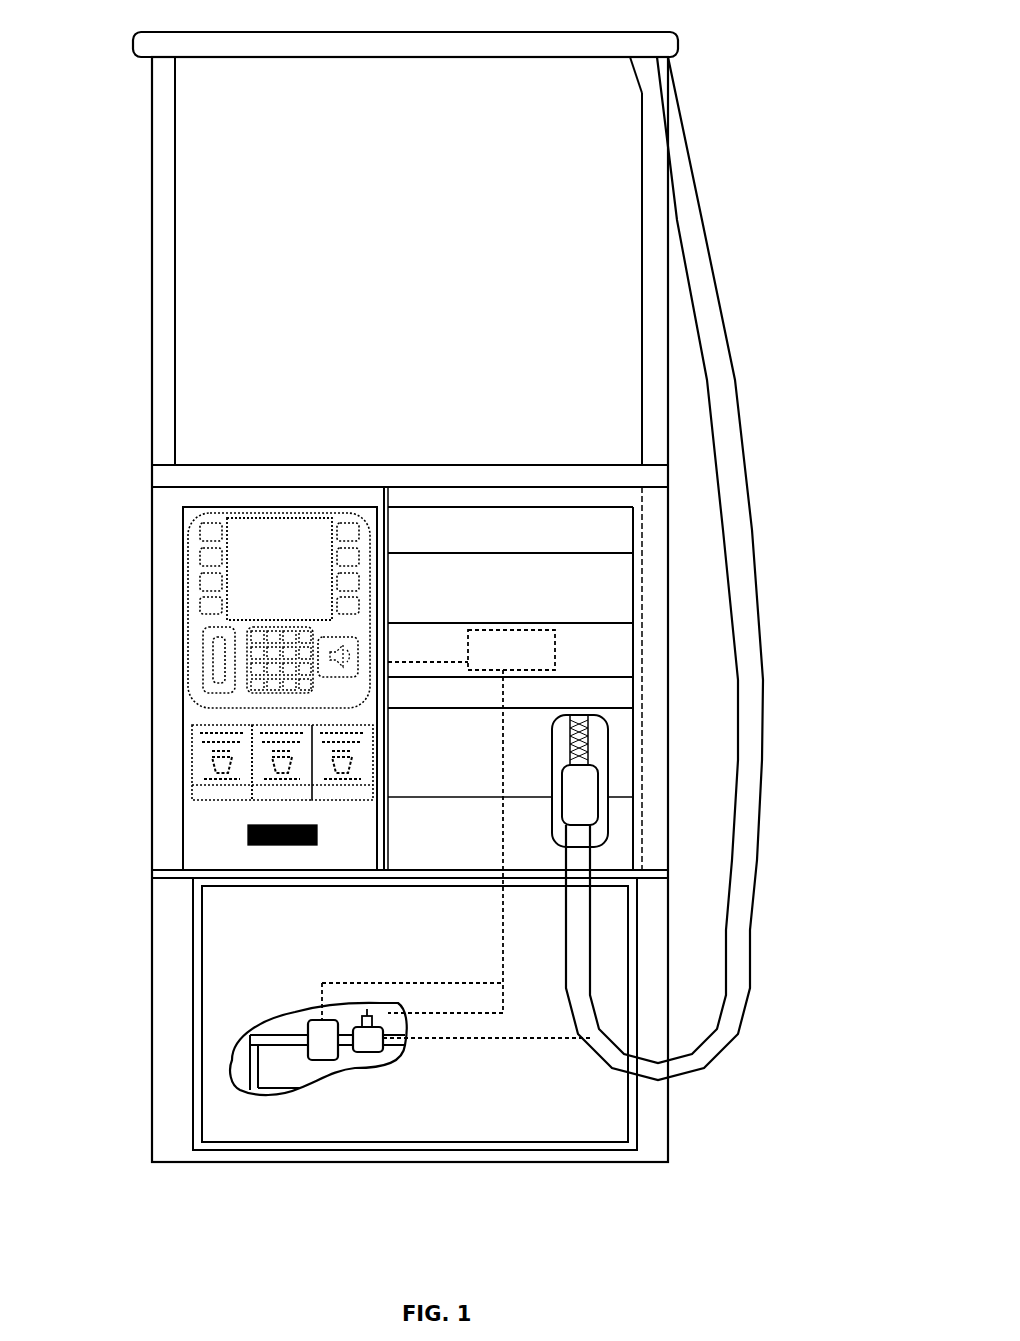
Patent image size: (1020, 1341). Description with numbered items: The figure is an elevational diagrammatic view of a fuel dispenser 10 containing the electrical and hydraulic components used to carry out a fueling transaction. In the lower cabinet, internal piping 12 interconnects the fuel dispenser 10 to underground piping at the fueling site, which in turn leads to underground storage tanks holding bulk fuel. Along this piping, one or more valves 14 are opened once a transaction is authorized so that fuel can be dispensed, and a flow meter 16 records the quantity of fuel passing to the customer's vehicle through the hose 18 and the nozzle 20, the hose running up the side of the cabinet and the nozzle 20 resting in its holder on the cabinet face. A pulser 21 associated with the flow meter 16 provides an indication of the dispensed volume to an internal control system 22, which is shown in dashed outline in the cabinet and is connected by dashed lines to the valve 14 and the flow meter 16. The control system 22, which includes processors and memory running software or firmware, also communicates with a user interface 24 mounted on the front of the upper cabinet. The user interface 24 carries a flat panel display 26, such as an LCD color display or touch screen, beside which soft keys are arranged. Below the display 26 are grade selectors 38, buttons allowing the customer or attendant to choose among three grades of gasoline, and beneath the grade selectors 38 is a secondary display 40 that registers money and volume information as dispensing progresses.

The fuel dispenser 10 is at (707, 105).
The internal piping 12 is at (265, 1057).
The valve 14 is at (305, 1027).
The flow meter 16 is at (370, 1045).
The hose 18 is at (733, 433).
The nozzle 20 is at (588, 795).
The pulser 21 is at (364, 1018).
The control system 22 is at (547, 630).
The user interface 24 is at (200, 718).
The flat panel display 26 is at (267, 563).
The grade selectors 38 is at (218, 805).
The secondary display 40 is at (317, 835).